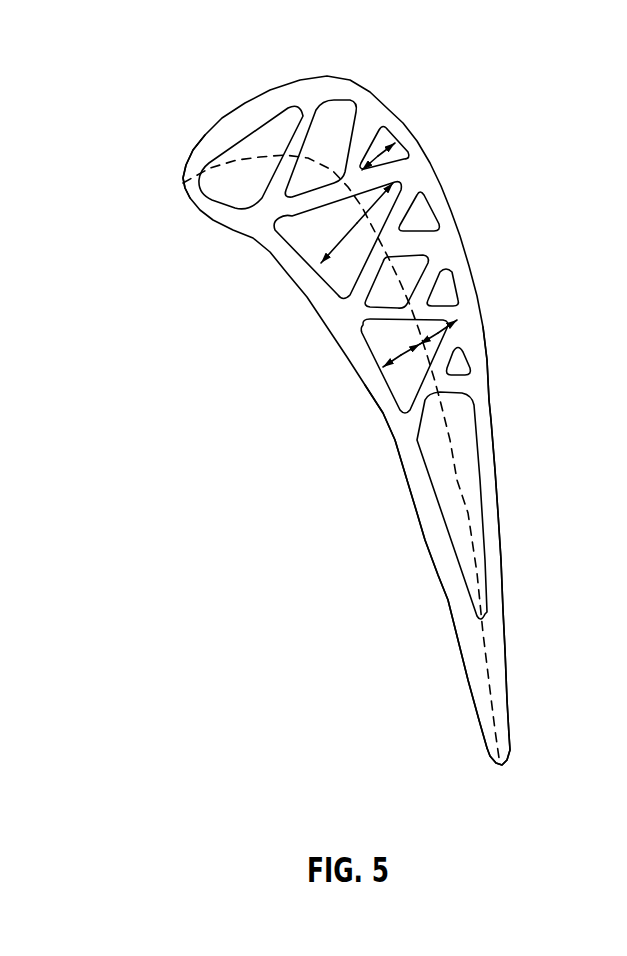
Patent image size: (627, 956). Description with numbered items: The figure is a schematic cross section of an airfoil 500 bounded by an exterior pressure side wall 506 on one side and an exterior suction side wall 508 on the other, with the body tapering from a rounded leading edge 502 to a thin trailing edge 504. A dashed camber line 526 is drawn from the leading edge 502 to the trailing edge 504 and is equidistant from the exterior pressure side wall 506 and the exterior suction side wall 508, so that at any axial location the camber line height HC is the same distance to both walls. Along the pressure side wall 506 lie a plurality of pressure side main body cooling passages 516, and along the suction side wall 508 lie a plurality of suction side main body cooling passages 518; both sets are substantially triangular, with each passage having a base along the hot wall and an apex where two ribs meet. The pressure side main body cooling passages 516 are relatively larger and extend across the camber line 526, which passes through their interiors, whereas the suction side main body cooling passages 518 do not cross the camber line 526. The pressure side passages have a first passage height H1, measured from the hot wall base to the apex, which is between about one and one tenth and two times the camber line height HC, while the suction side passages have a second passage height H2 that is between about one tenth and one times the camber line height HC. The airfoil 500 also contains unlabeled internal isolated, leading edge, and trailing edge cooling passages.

The airfoil 500 is at (163, 43).
The leading edge 502 is at (183, 178).
The trailing edge 504 is at (500, 765).
The exterior pressure side wall 506 is at (372, 396).
The exterior suction side wall 508 is at (493, 425).
The pressure side main body cooling passages 516 is at (348, 273).
The suction side main body cooling passages 518 is at (402, 155).
The camber line 526 is at (467, 519).
The first passage height H1 is at (347, 223).
The second passage height H2 is at (364, 168).
The camber line height HC is at (457, 320).